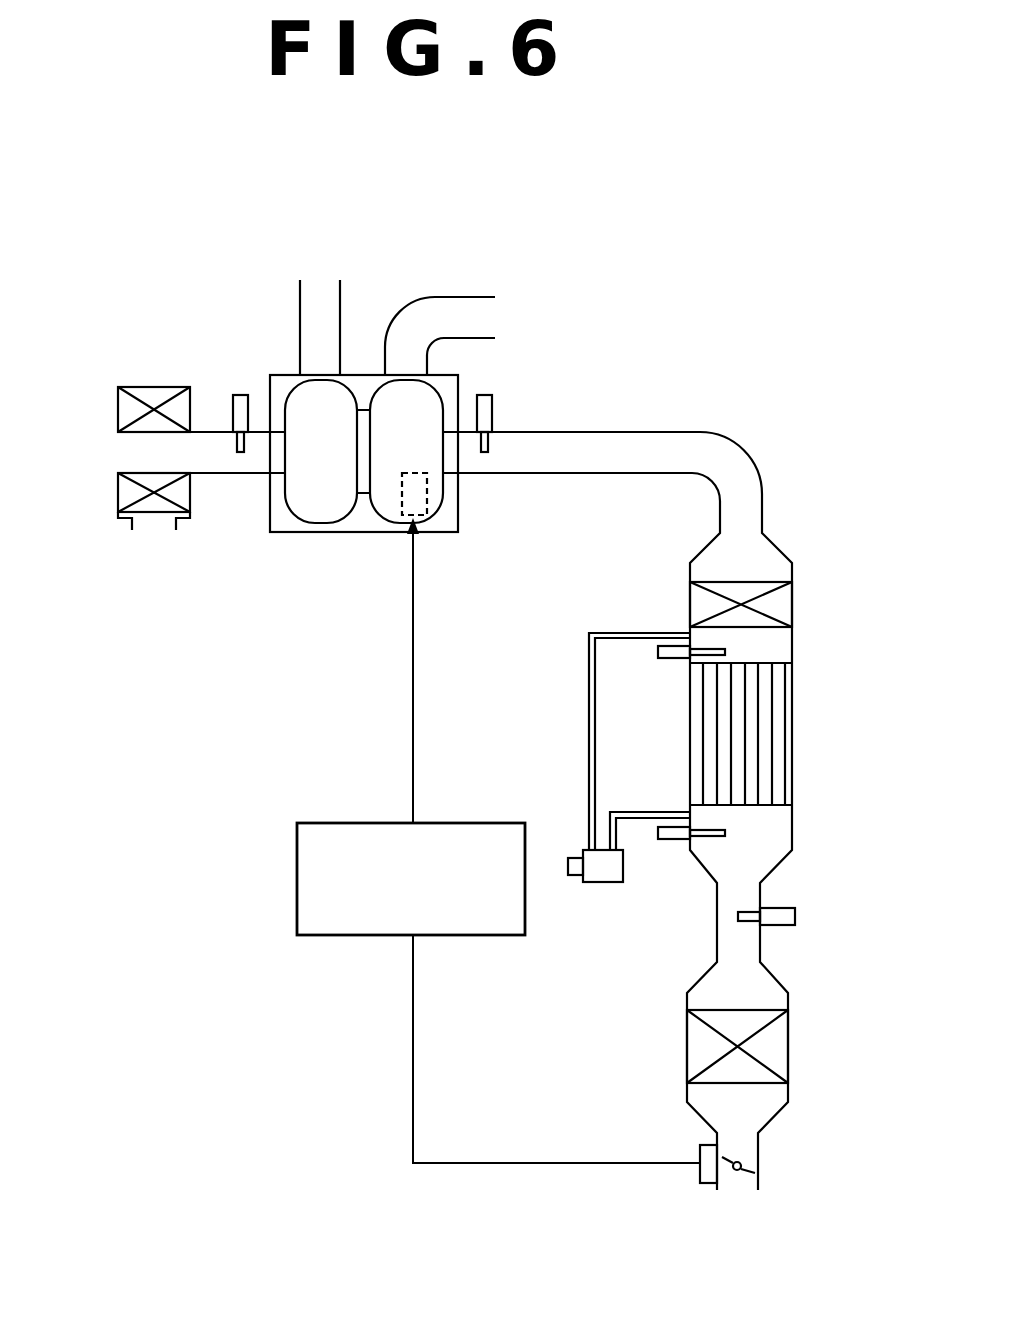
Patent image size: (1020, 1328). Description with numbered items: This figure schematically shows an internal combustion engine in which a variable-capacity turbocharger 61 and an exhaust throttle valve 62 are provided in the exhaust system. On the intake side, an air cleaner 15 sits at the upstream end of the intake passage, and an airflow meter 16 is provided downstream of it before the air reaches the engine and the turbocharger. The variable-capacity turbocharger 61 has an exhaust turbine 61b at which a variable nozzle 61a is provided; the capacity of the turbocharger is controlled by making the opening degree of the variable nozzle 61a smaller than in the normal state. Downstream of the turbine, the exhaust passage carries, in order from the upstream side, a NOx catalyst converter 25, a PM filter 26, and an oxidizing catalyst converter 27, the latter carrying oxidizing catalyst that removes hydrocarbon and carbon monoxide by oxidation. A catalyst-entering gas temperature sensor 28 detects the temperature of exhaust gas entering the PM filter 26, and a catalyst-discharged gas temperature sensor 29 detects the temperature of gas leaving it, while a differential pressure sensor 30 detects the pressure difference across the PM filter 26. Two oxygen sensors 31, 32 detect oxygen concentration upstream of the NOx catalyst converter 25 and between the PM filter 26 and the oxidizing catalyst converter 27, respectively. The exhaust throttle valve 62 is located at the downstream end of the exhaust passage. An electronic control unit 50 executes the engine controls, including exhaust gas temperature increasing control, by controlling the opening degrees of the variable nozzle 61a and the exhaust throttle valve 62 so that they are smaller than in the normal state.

The air cleaner 15 is at (125, 490).
The airflow meter 16 is at (233, 415).
The oxygen sensor 31 is at (492, 412).
The variable-capacity turbocharger 61 is at (270, 520).
The variable nozzle 61a is at (402, 510).
The exhaust turbine 61b is at (443, 487).
The NOx catalyst converter 25 is at (780, 603).
The PM filter 26 is at (780, 705).
The oxidizing catalyst converter 27 is at (778, 1048).
The catalyst-entering gas temperature sensor 28 is at (676, 660).
The catalyst-discharged gas temperature sensor 29 is at (676, 840).
The differential pressure sensor 30 is at (603, 882).
The oxygen sensor 32 is at (778, 925).
The electronic control unit 50 is at (492, 823).
The exhaust throttle valve 62 is at (740, 1170).